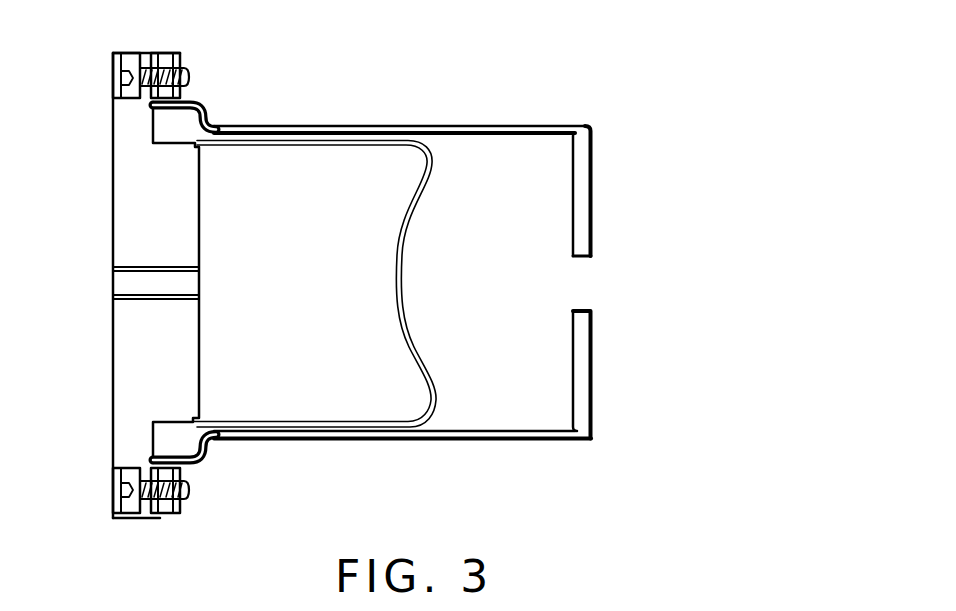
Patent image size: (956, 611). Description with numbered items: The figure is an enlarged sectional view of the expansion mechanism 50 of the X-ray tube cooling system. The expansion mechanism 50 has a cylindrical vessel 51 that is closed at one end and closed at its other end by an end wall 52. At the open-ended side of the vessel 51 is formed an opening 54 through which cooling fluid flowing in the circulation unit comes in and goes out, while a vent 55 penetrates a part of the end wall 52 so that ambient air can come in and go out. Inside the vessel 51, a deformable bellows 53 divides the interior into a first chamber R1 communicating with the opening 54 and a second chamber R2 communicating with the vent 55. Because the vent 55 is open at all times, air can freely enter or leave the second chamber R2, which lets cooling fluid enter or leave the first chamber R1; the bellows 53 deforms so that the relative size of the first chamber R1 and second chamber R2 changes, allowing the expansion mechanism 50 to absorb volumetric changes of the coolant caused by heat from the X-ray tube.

The expansion mechanism 50 is at (546, 89).
The cylindrical vessel 51 is at (555, 441).
The end wall 52 is at (122, 154).
The bellows 53 is at (438, 175).
The opening 54 is at (583, 311).
The vent 55 is at (137, 295).
The first chamber R1 is at (472, 415).
The second chamber R2 is at (304, 412).